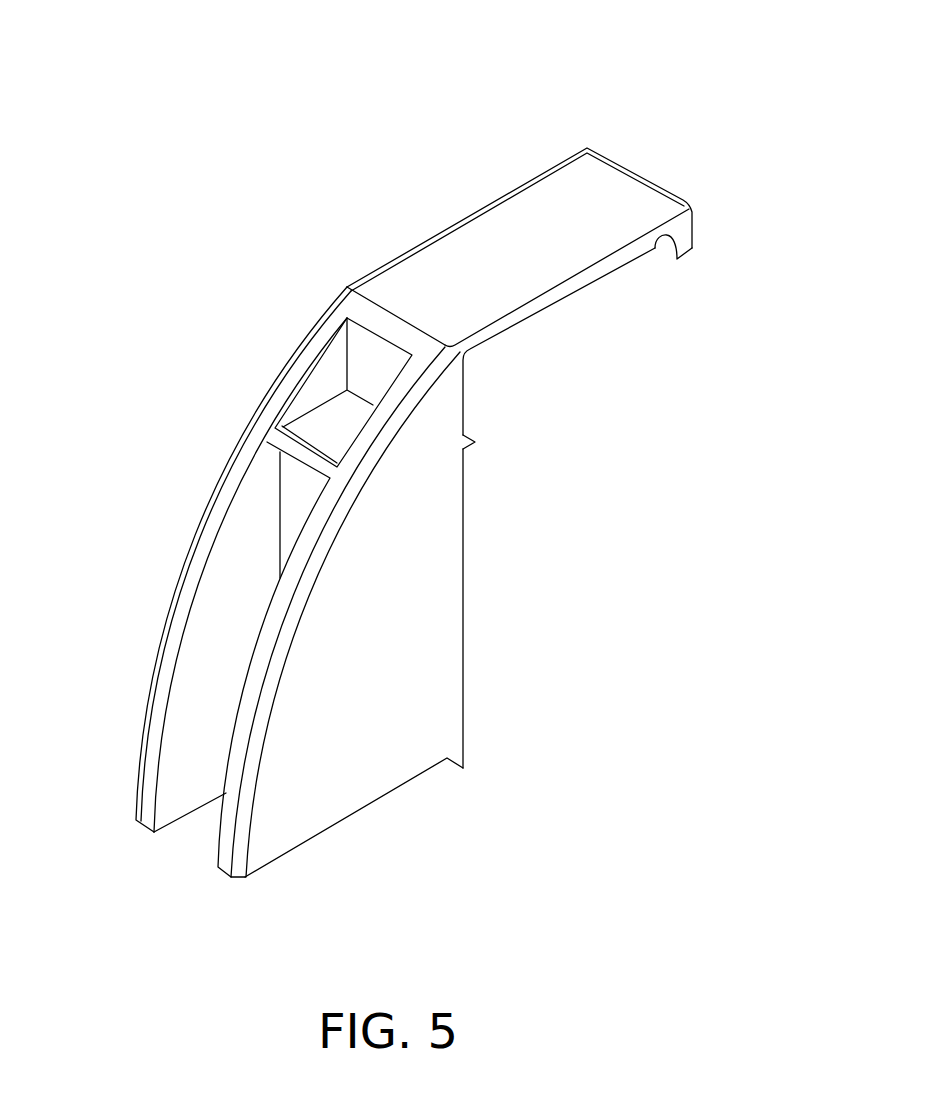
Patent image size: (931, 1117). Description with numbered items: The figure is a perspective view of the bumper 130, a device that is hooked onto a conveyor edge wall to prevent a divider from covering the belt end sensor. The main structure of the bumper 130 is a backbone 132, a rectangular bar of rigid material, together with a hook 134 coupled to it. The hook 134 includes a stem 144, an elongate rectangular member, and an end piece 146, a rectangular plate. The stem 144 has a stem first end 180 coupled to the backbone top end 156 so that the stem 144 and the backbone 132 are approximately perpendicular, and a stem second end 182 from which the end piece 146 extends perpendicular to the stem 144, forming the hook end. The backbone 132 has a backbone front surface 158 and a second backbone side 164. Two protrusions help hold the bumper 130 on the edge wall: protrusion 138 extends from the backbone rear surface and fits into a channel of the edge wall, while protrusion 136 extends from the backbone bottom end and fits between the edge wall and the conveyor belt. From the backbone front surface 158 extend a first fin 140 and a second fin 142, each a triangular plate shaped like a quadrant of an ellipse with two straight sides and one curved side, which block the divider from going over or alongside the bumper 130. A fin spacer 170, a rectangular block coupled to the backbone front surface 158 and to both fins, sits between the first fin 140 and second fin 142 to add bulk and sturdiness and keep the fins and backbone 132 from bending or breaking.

The bumper 130 is at (403, 150).
The backbone 132 is at (470, 553).
The hook 134 is at (510, 163).
The protrusion 136 is at (465, 762).
The protrusion 138 is at (472, 450).
The first fin 140 is at (222, 577).
The second fin 142 is at (333, 792).
The stem 144 is at (568, 248).
The end piece 146 is at (700, 234).
The backbone top end 156 is at (350, 303).
The backbone front surface 158 is at (366, 363).
The second backbone side 164 is at (468, 666).
The fin spacer 170 is at (300, 487).
The stem first end 180 is at (367, 252).
The stem second end 182 is at (615, 153).